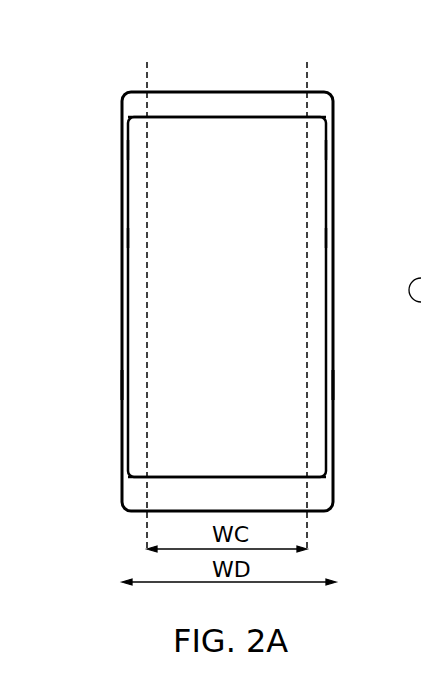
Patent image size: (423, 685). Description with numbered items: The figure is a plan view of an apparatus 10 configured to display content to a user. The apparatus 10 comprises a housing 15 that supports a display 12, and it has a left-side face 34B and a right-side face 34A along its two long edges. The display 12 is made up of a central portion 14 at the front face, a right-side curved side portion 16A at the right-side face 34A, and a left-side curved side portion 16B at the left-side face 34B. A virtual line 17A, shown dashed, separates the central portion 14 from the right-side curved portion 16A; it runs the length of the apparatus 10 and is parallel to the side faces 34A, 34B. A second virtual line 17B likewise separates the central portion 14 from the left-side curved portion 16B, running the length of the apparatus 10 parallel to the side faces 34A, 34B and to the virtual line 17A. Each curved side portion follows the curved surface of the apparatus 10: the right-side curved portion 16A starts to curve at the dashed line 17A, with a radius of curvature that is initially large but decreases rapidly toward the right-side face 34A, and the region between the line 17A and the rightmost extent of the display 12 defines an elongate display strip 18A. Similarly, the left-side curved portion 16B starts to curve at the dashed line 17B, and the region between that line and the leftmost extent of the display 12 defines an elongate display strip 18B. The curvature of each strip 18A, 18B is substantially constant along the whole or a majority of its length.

The apparatus 10 is at (260, 92).
The display 12 is at (207, 133).
The central portion 14 is at (227, 297).
The housing 15 is at (227, 492).
The right-side curved side portion 16A is at (316, 238).
The left-side curved side portion 16B is at (137, 238).
The virtual line 17A is at (307, 62).
The virtual line 17B is at (147, 62).
The elongate display strip 18A is at (316, 150).
The elongate display strip 18B is at (137, 150).
The right-side face 34A is at (334, 387).
The left-side face 34B is at (120, 386).